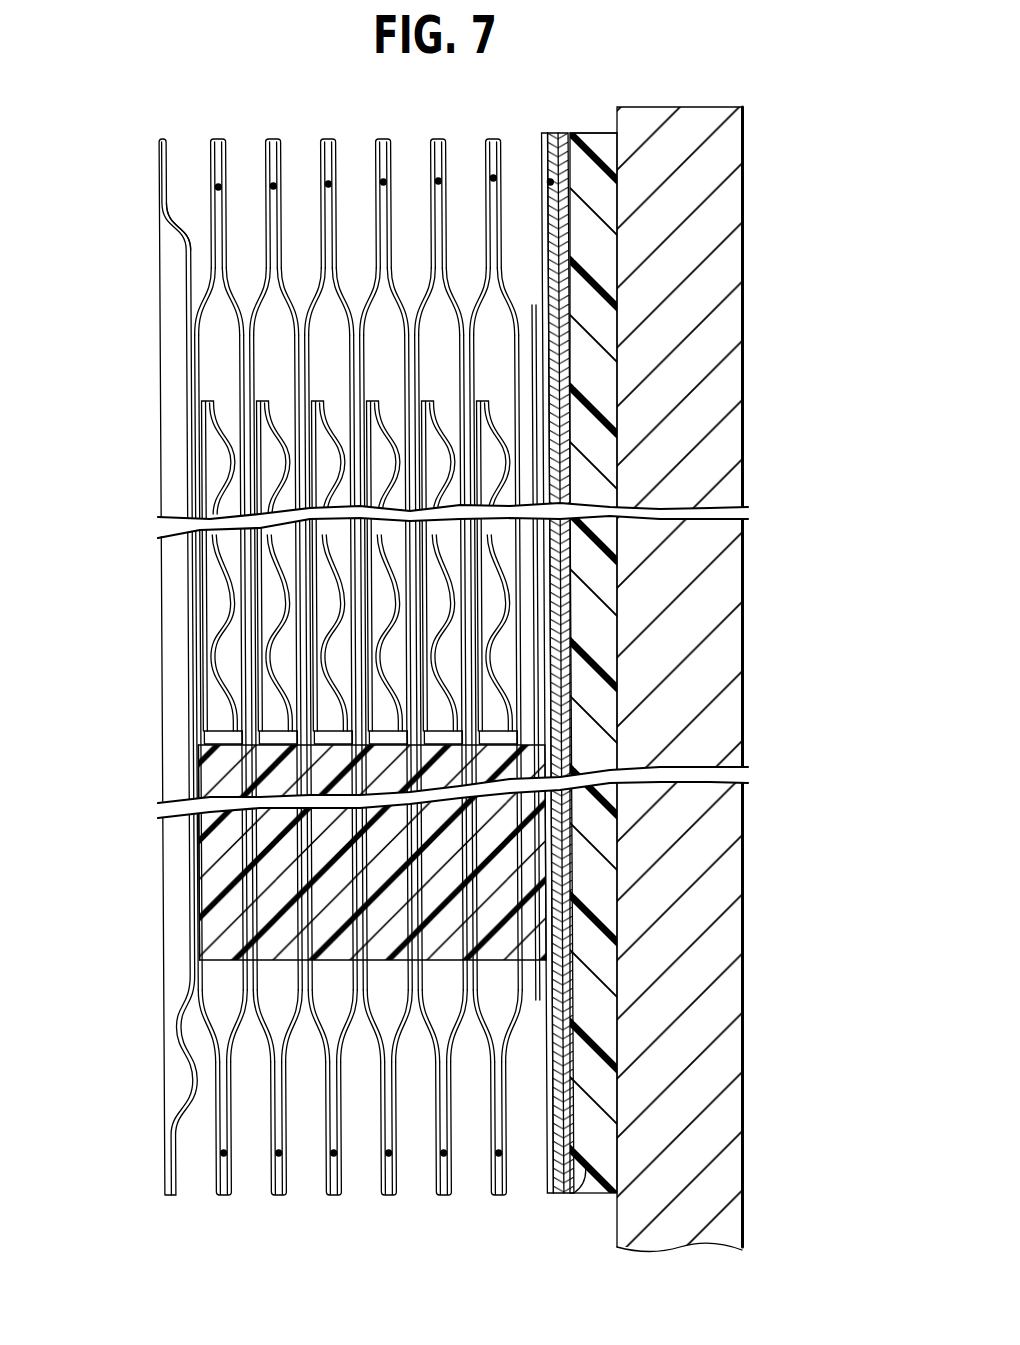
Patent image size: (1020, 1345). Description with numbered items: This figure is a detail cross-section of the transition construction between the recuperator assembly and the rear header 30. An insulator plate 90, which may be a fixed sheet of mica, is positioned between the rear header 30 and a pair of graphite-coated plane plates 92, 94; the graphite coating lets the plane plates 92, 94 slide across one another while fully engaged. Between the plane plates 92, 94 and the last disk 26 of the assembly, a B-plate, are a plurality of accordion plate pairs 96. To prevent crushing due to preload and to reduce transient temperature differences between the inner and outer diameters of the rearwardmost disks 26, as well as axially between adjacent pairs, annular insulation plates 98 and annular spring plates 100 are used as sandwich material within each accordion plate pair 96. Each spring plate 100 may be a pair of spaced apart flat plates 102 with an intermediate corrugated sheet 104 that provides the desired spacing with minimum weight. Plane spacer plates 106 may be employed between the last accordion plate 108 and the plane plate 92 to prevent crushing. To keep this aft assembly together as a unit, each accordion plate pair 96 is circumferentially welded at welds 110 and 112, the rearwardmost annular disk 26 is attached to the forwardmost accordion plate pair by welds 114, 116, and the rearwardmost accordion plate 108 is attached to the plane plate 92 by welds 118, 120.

The last disk 26 is at (161, 186).
The rear header 30 is at (745, 243).
The insulator plate 90 is at (592, 133).
The plane plate 92 is at (552, 134).
The plane plate 94 is at (565, 133).
The accordion plate pairs 96 is at (328, 125).
The annular insulation plates 98 is at (216, 858).
The annular spring plates 100 is at (190, 635).
The flat plates 102 is at (240, 690).
The corrugated sheet 104 is at (222, 578).
The plane spacer plates 106 is at (545, 596).
The last accordion plate 108 is at (548, 302).
The weld 110 is at (219, 186).
The weld 112 is at (219, 1154).
The weld 114 is at (199, 412).
The weld 116 is at (199, 934).
The weld 118 is at (556, 182).
The weld 120 is at (582, 1188).